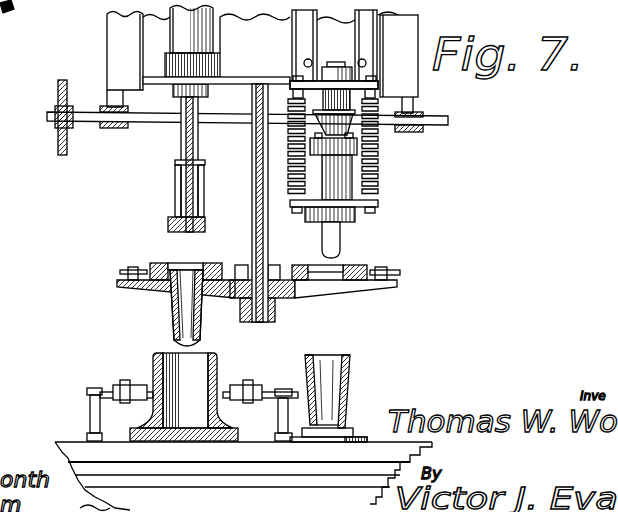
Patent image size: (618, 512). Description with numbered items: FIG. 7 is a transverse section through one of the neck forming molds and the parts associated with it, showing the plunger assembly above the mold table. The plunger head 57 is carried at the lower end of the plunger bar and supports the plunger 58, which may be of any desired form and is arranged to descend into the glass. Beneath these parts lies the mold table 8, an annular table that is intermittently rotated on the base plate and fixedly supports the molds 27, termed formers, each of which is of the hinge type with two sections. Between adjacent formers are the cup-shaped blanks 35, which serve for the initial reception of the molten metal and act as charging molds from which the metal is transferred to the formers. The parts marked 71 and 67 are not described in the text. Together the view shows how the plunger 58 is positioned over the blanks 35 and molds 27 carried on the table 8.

The plunger head 57 is at (378, 157).
The plunger 58 is at (340, 227).
The conical carrier plate 71 is at (297, 298).
The guide rod 67 is at (172, 228).
The mold 27 is at (170, 368).
The mold table 8 is at (78, 448).
The blank 35 is at (343, 380).